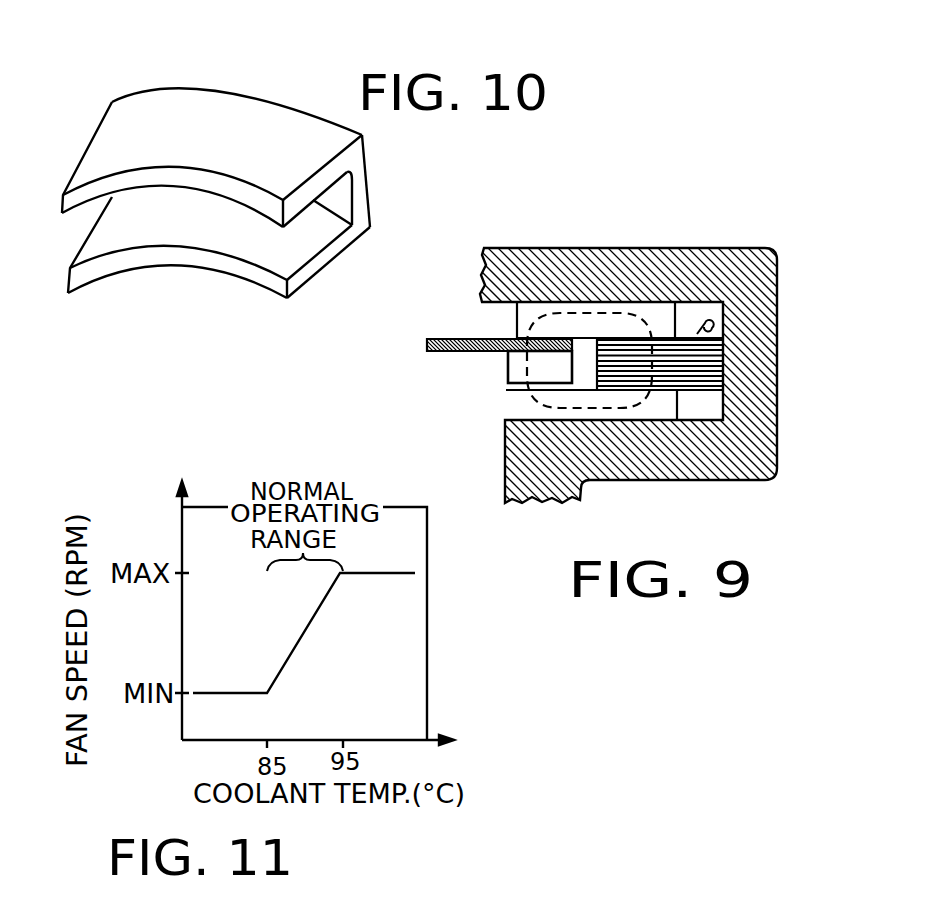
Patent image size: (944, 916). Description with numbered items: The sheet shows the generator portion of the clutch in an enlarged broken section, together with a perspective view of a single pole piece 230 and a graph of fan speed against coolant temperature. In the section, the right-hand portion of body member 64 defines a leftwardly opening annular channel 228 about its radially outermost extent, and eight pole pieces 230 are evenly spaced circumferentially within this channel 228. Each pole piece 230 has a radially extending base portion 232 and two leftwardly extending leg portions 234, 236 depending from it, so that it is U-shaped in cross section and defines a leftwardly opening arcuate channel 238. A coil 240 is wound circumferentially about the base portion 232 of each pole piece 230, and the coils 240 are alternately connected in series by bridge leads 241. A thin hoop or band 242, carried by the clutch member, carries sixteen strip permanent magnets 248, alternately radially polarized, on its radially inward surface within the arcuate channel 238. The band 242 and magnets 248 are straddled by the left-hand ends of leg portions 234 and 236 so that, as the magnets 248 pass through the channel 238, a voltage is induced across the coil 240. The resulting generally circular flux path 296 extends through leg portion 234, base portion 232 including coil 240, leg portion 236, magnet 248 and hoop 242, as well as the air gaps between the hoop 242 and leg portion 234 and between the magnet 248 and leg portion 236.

In FIG. 9, the body member 64 is at (752, 310).
In FIG. 9, the annular channel 228 is at (693, 312).
In FIG. 10, the pole piece 230 is at (245, 170).
In FIG. 9, the pole piece 230 is at (585, 363).
In FIG. 10, the base portion 232 is at (362, 203).
In FIG. 9, the base portion 232 is at (663, 390).
In FIG. 10, the leg portion 234 is at (80, 160).
In FIG. 9, the leg portion 234 is at (530, 317).
In FIG. 10, the leg portion 236 is at (320, 260).
In FIG. 9, the leg portion 236 is at (510, 403).
In FIG. 9, the arcuate channel 238 is at (508, 387).
In FIG. 9, the coil 240 is at (708, 366).
In FIG. 9, the bridge lead 241 is at (715, 325).
In FIG. 9, the band 242 is at (478, 338).
In FIG. 9, the permanent magnet 248 is at (508, 360).
In FIG. 9, the flux path 296 is at (600, 292).